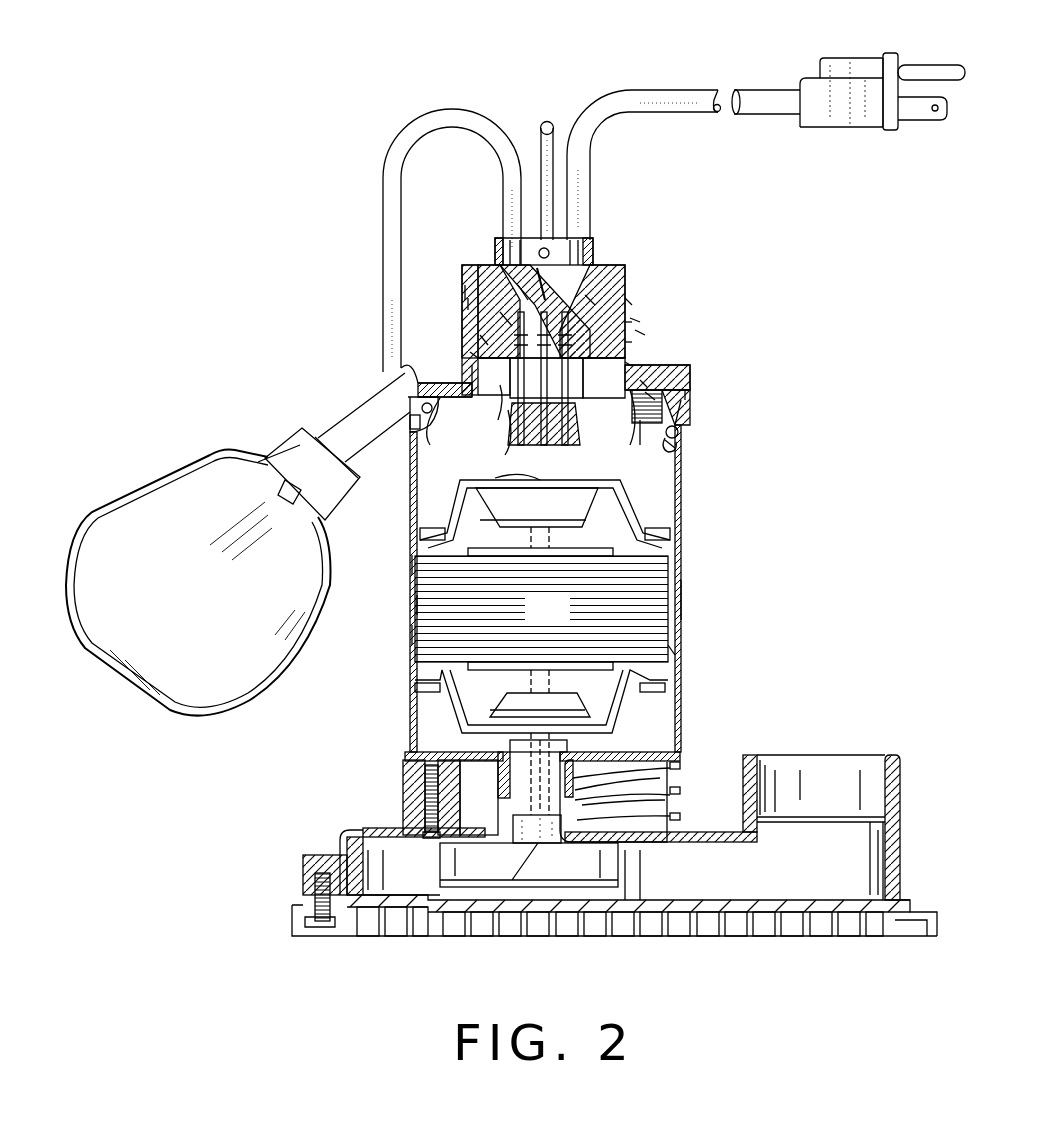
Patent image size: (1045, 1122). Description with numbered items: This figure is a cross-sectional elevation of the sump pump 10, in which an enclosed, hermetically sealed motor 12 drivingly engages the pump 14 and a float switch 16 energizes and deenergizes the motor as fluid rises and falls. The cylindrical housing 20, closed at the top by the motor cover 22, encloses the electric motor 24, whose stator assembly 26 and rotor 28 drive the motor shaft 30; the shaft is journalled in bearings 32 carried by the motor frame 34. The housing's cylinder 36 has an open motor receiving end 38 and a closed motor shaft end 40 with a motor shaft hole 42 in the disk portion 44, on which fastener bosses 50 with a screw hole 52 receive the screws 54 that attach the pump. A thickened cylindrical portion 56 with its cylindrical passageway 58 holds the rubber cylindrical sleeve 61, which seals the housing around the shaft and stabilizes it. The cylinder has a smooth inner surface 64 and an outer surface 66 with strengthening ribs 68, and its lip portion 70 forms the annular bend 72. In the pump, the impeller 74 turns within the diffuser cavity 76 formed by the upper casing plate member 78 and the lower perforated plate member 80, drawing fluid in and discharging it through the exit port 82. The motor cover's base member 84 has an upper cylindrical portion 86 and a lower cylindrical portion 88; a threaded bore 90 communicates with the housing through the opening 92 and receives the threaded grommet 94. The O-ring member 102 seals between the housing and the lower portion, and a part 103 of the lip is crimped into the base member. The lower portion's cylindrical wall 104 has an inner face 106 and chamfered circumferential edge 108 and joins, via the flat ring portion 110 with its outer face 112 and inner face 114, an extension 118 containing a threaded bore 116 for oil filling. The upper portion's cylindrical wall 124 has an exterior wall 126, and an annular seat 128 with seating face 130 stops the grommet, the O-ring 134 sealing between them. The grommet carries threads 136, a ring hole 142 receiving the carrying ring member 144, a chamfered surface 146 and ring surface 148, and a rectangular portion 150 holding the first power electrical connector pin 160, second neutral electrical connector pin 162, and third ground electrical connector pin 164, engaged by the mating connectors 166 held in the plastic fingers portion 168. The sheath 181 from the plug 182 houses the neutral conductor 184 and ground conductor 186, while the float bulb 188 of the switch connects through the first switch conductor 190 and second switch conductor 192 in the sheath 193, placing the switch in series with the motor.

The sump pump 10 is at (842, 364).
The enclosed motor 12 is at (696, 603).
The pump 14 is at (356, 960).
The float switch 16 is at (151, 464).
The cylindrical housing 20 is at (399, 671).
The motor cover 22 is at (723, 320).
The electric motor 24 is at (420, 706).
The stator assembly 26 is at (552, 618).
The rotor 28 is at (560, 556).
The motor shaft 30 is at (560, 535).
The bearings 32 is at (527, 505).
The motor frame 34 is at (625, 490).
The cylinder 36 is at (670, 656).
The motor receiving end 38 is at (704, 440).
The motor shaft end 40 is at (410, 746).
The motor shaft hole 42 is at (516, 824).
The disk portion 44 is at (560, 752).
The fastener bosses 50 is at (425, 772).
The screw hole 52 is at (425, 792).
The screws 54 is at (435, 812).
The thickened cylindrical portion 56 is at (668, 772).
The cylindrical passageway 58 is at (668, 800).
The rubber cylindrical sleeve 61 is at (620, 762).
The inner surface 64 is at (416, 630).
The outer surface 66 is at (410, 562).
The strengthening ribs 68 is at (420, 602).
The lip portion 70 is at (666, 406).
The annular bend 72 is at (400, 428).
The impeller 74 is at (597, 889).
The diffuser cavity 76 is at (722, 882).
The upper casing plate member 78 is at (345, 832).
The lower perforated plate member 80 is at (818, 935).
The exit port 82 is at (822, 762).
The base member 84 is at (642, 385).
The upper cylindrical portion 86 is at (463, 292).
The lower cylindrical portion 88 is at (700, 399).
The threaded bore 90 is at (592, 300).
The opening 92 is at (477, 434).
The threaded grommet 94 is at (510, 320).
The O-ring member 102 is at (422, 408).
The part of housing 103 is at (397, 396).
The cylindrical wall 104 is at (665, 400).
The inner face 106 is at (402, 394).
The chamfered circumferential edge 108 is at (667, 446).
The flat ring portion 110 is at (442, 376).
The outer face 112 is at (395, 370).
The inner face 114 is at (644, 421).
The threaded bore 116 is at (648, 396).
The extension 118 is at (644, 449).
The cylindrical wall 124 is at (630, 302).
The exterior wall 126 is at (630, 322).
The annular seat 128 is at (643, 368).
The seating face 130 is at (568, 382).
The O-ring 134 is at (482, 340).
The threads 136 is at (638, 320).
The ring hole 142 is at (541, 210).
The carrying ring member 144 is at (552, 126).
The chamfered surface 146 is at (630, 342).
The ring surface 148 is at (472, 355).
The rectangular portion 150 is at (512, 432).
The first power electrical connector pin 160 is at (462, 292).
The second neutral electrical connector pin 162 is at (479, 402).
The third ground electrical connector pin 164 is at (645, 333).
The mating connectors 166 is at (560, 442).
The plastic fingers portion 168 is at (520, 480).
The sheath 181 is at (682, 96).
The plug 182 is at (848, 97).
The second neutral conductor 184 is at (922, 122).
The third ground conductor 186 is at (928, 68).
The float bulb 188 is at (224, 592).
The first switch conductor 190 is at (540, 262).
The second switch conductor 192 is at (520, 290).
The sheath 193 is at (390, 215).